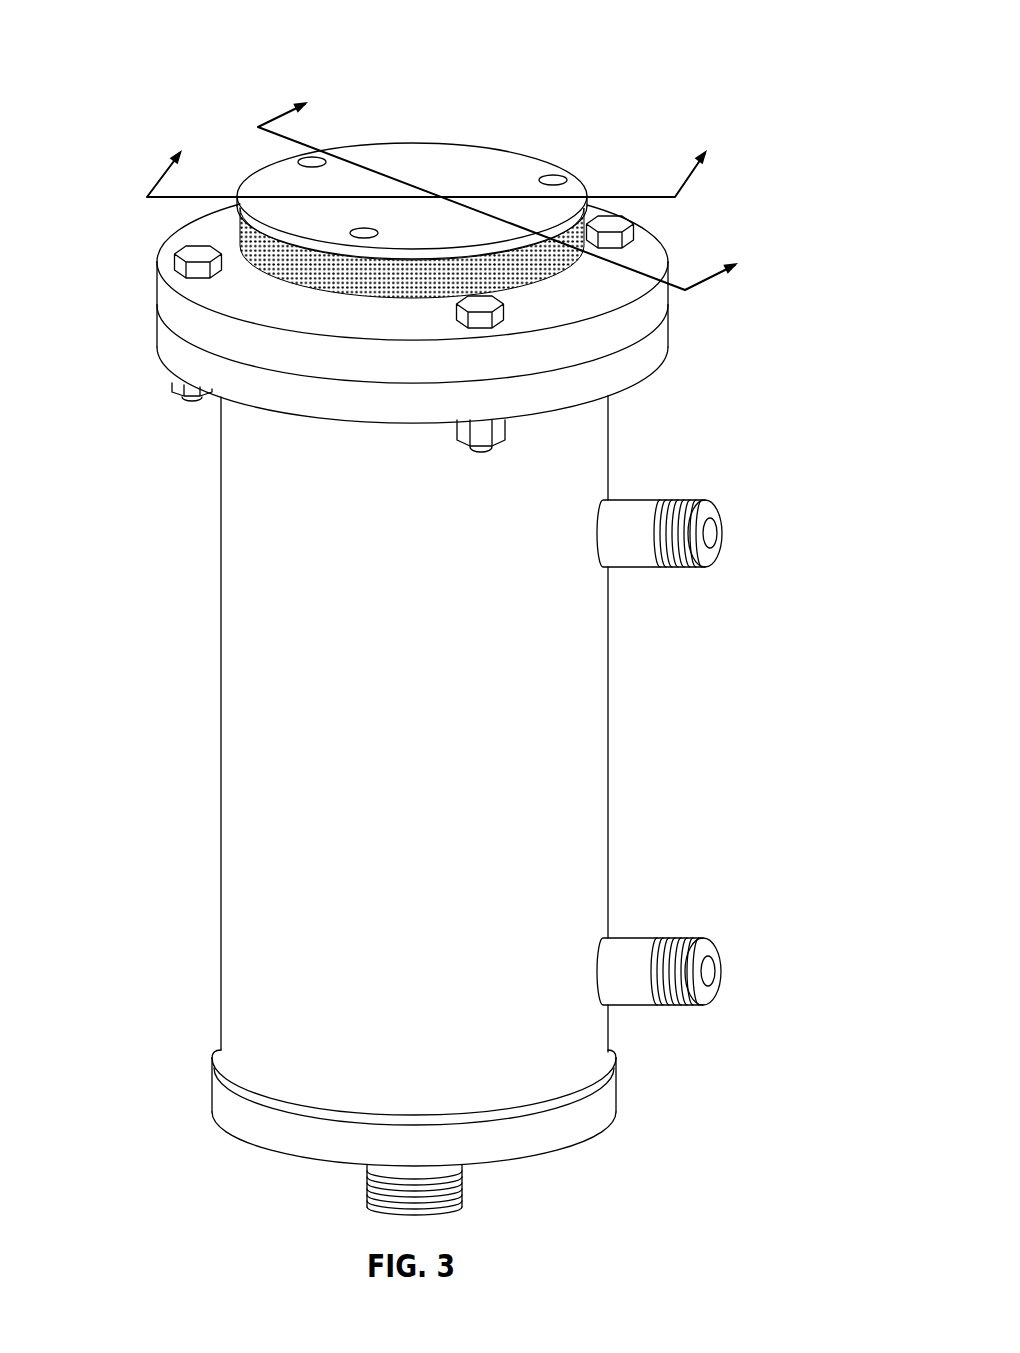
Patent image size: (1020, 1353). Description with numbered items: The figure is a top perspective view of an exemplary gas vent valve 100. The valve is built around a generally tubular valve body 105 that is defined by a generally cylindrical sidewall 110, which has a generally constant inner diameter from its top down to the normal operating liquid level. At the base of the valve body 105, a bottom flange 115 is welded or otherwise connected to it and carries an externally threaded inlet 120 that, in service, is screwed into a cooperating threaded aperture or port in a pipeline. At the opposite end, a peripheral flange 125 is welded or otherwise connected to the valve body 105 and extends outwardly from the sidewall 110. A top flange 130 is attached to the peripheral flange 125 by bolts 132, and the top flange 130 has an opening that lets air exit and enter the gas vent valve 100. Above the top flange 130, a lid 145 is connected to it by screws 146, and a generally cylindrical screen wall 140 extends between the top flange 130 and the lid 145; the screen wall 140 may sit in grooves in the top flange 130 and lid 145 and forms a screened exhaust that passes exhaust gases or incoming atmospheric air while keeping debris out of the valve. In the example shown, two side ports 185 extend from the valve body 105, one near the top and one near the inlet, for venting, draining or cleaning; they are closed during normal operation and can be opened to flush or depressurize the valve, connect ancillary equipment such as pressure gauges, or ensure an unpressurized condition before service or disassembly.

The gas vent valve 100 is at (613, 58).
The valve body 105 is at (193, 678).
The sidewall 110 is at (590, 688).
The bottom flange 115 is at (222, 1098).
The externally threaded inlet 120 is at (438, 1203).
The peripheral flange 125 is at (168, 338).
The top flange 130 is at (167, 292).
The bolts 132 is at (190, 250).
The screen wall 140 is at (263, 270).
The lid 145 is at (450, 160).
The screws 146 is at (364, 228).
The side ports 185 is at (625, 567).